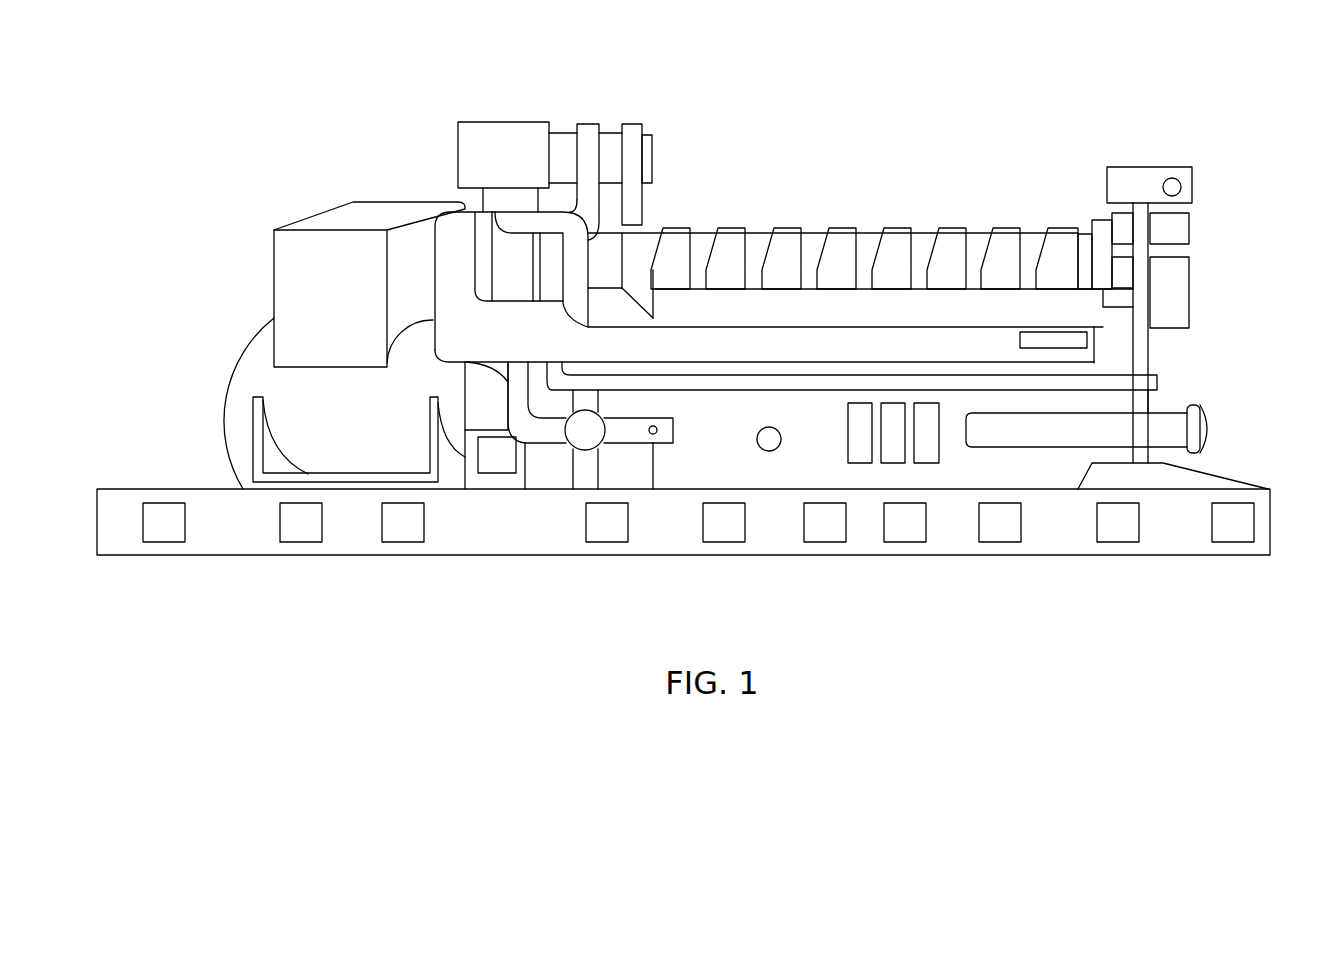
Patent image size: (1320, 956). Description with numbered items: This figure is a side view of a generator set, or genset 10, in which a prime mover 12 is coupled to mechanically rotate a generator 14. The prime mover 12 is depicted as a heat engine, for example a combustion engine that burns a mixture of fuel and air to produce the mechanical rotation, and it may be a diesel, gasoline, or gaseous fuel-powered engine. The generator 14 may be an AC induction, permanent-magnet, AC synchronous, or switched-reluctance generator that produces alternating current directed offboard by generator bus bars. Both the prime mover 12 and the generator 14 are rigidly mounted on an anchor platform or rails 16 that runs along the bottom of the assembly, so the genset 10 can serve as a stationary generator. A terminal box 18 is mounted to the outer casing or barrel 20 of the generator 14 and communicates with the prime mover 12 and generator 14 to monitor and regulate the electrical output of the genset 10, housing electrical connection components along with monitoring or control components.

The generator set 10 is at (207, 579).
The prime mover 12 is at (432, 105).
The generator 14 is at (214, 386).
The anchor platform or rails 16 is at (1266, 516).
The terminal box 18 is at (262, 208).
The outer casing 20 is at (257, 355).